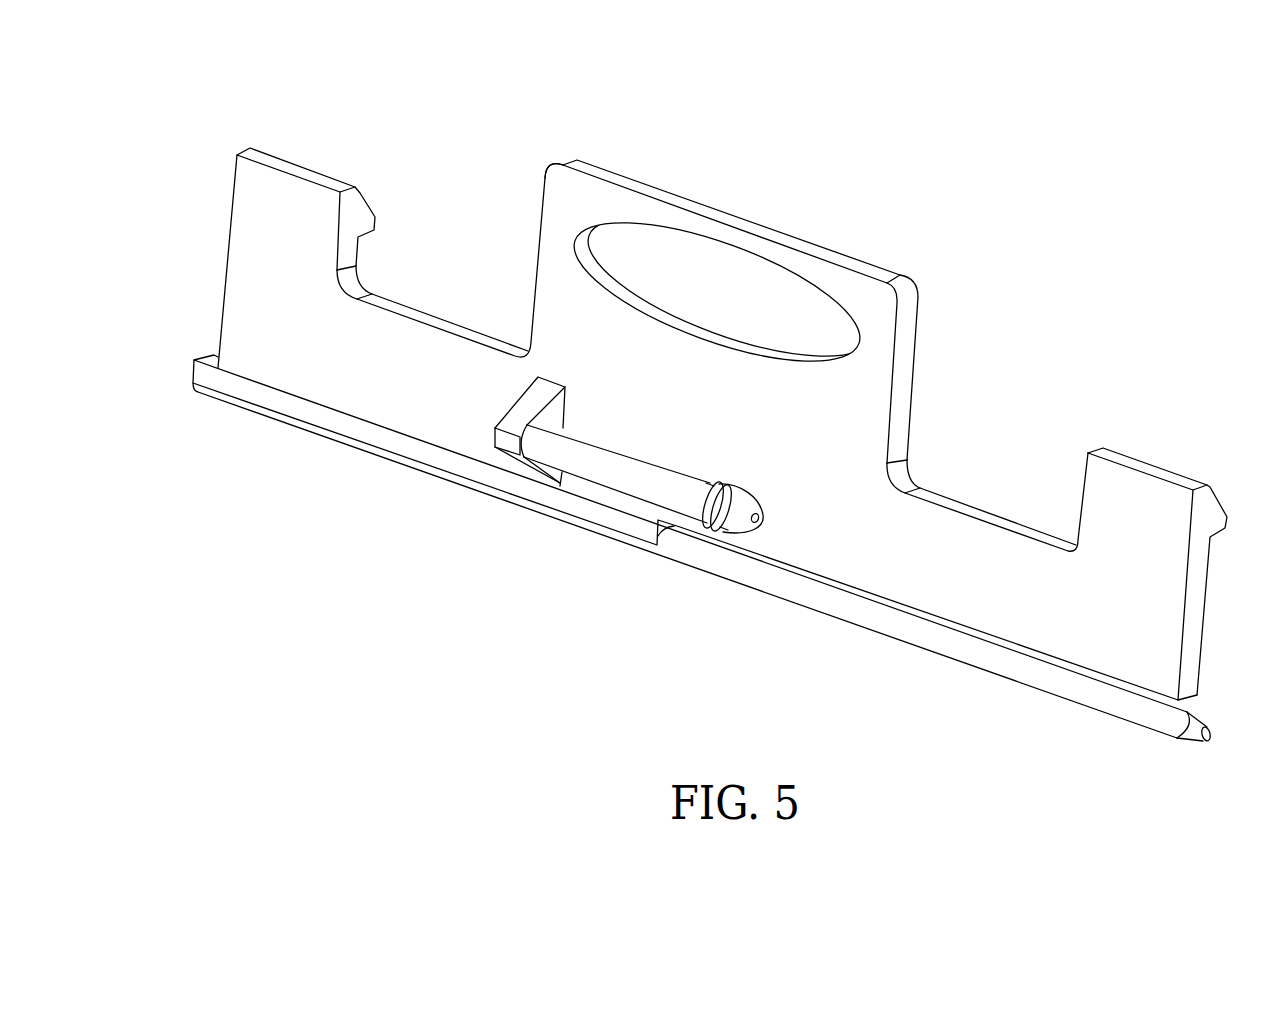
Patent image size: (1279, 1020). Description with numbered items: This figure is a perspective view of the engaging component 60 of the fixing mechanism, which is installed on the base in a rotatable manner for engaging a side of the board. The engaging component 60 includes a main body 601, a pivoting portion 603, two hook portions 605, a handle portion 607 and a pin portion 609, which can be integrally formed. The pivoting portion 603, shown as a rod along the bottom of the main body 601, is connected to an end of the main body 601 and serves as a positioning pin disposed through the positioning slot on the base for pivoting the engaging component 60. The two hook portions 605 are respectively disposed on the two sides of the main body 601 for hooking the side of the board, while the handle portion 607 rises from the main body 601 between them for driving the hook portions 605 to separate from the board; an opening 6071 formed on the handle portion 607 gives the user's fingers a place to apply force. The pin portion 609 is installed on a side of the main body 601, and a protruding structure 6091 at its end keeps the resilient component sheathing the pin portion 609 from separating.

The engaging component 60 is at (953, 172).
The main body 601 is at (962, 540).
The pivoting portion 603 is at (941, 646).
The hook portion 605 is at (305, 164).
The handle portion 607 is at (840, 273).
The opening 6071 is at (698, 272).
The pin portion 609 is at (622, 477).
The protruding structure 6091 is at (742, 523).